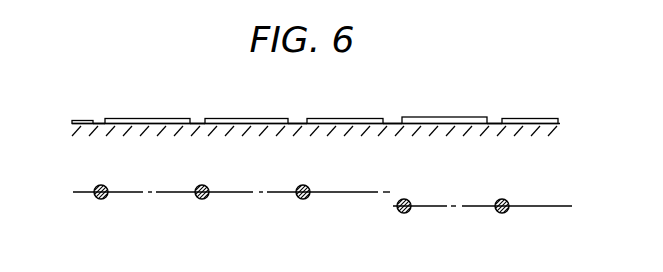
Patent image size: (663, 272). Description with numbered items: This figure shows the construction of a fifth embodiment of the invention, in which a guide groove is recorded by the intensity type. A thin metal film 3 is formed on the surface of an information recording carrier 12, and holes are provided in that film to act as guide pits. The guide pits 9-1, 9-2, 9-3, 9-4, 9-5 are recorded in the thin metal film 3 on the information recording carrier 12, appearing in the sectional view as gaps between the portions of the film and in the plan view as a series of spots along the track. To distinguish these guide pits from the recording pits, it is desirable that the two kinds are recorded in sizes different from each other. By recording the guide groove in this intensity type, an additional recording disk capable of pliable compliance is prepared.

The thin metal film 3 is at (145, 118).
The guide pit 9-1 is at (96, 121).
The guide pit 9-2 is at (198, 121).
The guide pit 9-3 is at (298, 121).
The guide pit 9-4 is at (398, 121).
The guide pit 9-5 is at (498, 121).
The information recording carrier 12 is at (316, 145).